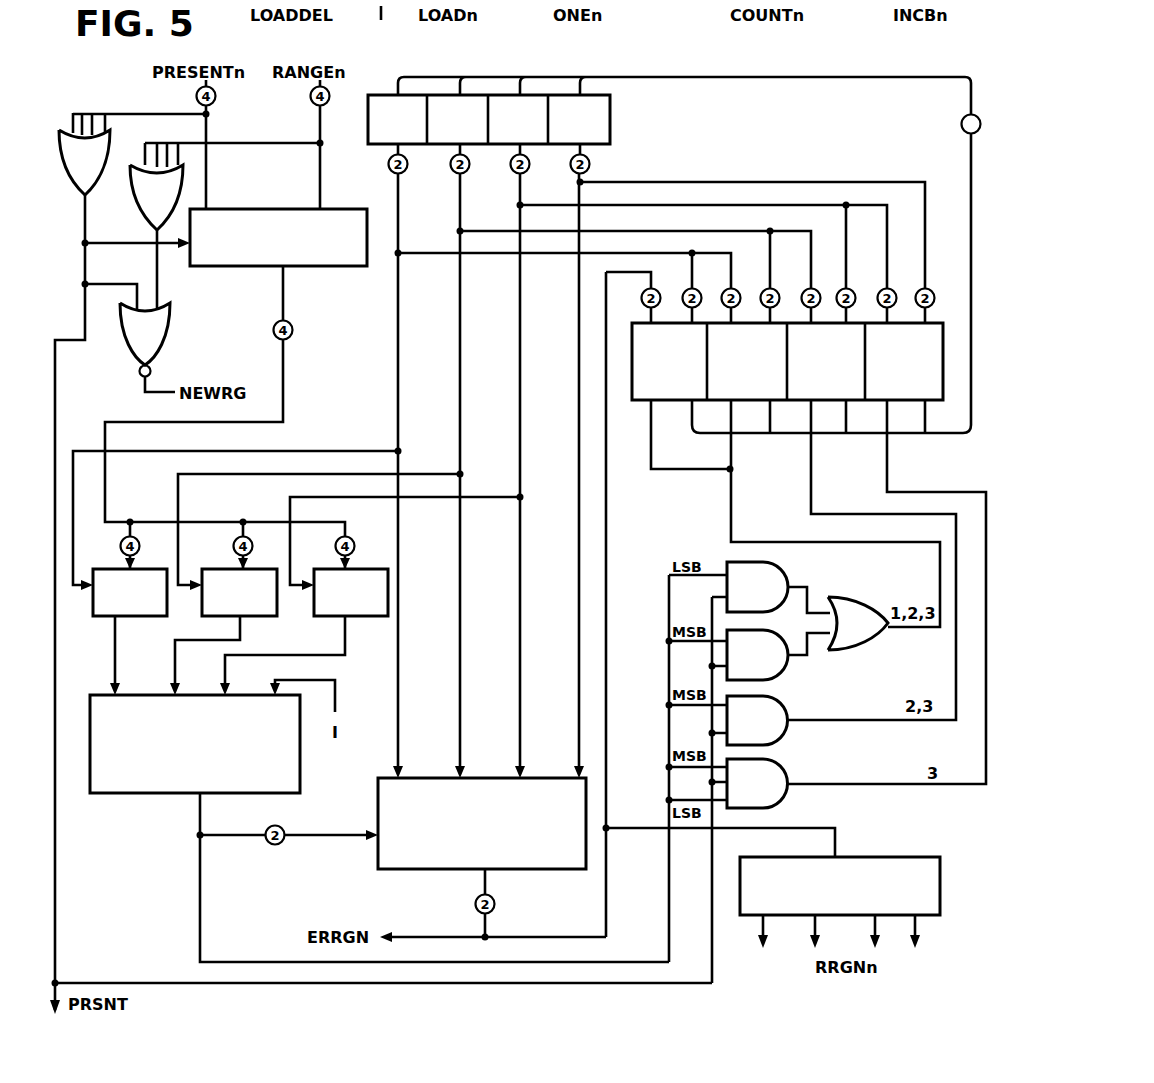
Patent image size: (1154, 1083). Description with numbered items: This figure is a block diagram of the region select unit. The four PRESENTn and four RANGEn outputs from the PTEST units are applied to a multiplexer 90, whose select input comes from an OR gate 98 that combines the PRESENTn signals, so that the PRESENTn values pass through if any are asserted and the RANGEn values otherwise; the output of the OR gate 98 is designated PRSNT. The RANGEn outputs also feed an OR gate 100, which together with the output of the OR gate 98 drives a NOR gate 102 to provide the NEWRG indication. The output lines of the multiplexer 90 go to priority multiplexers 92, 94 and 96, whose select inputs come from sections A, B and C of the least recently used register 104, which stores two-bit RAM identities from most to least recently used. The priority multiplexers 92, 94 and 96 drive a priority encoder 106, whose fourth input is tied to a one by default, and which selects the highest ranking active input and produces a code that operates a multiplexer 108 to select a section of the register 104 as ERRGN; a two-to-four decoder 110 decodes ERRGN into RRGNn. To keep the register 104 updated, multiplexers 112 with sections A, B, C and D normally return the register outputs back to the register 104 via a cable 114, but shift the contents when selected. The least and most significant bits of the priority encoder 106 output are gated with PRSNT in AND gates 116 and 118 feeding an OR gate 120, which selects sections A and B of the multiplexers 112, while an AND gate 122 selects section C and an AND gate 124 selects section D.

The multiplexer 90 is at (327, 266).
The priority multiplexer 92 is at (155, 568).
The priority multiplexer 94 is at (218, 568).
The priority multiplexer 96 is at (376, 568).
The OR gate 98 is at (64, 178).
The OR gate 100 is at (134, 203).
The NOR gate 102 is at (170, 330).
The least recently used register 104 is at (610, 125).
The priority encoder 106 is at (130, 793).
The multiplexer 108 is at (378, 792).
The 2 to 4 decoder 110 is at (913, 857).
The multiplexers 112 is at (632, 363).
The cable 114 is at (829, 78).
The AND gate 116 is at (788, 571).
The AND gate 118 is at (788, 672).
The OR gate 120 is at (866, 649).
The AND gate 122 is at (788, 737).
The AND gate 124 is at (788, 801).